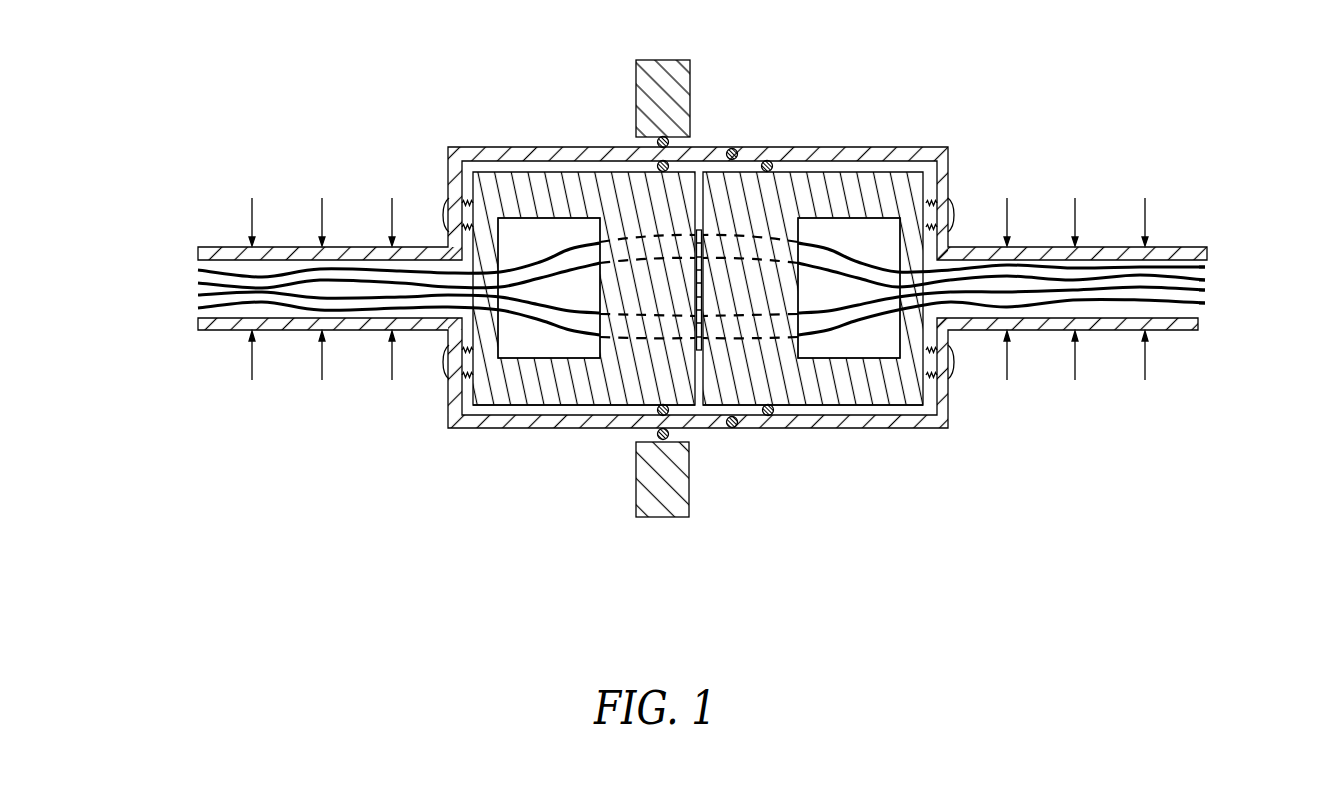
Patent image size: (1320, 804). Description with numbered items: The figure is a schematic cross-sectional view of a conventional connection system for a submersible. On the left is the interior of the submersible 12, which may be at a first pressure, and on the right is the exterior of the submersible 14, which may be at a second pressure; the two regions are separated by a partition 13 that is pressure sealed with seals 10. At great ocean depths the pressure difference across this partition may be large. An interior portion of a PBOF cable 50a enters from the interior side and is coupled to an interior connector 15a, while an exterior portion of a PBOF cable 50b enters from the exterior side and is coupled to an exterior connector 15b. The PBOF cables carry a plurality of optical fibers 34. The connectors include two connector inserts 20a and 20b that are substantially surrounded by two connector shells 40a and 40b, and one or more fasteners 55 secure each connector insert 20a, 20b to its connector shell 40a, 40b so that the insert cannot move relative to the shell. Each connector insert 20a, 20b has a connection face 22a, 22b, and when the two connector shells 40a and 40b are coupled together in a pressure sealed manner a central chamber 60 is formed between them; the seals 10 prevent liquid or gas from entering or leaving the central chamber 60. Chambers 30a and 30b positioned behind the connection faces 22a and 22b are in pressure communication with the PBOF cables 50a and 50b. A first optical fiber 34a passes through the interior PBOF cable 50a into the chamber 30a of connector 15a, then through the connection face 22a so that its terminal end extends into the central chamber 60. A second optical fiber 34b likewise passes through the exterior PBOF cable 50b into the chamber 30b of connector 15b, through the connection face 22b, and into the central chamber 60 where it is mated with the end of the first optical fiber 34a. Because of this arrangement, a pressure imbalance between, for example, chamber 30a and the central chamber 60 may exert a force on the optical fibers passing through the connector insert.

The seals 10 is at (668, 141).
The interior of a submersible 12 is at (333, 163).
The partition 13 is at (678, 94).
The exterior of a submersible 14 is at (1086, 163).
The interior connector 15a is at (554, 338).
The exterior connector 15b is at (826, 338).
The connector insert 20a is at (515, 375).
The connector insert 20b is at (848, 375).
The connection face 22a is at (695, 290).
The connection face 22b is at (703, 290).
The chamber 30a is at (522, 230).
The chamber 30b is at (870, 230).
The optical fibers 34 is at (1188, 303).
The first optical fiber 34a is at (568, 243).
The second optical fiber 34b is at (832, 243).
The connector shell 40a is at (584, 438).
The connector shell 40b is at (758, 430).
The interior portion of a PBOF cable 50a is at (373, 292).
The exterior portion of a PBOF cable 50b is at (1028, 292).
The fasteners 55 is at (444, 212).
The central chamber 60 is at (698, 403).